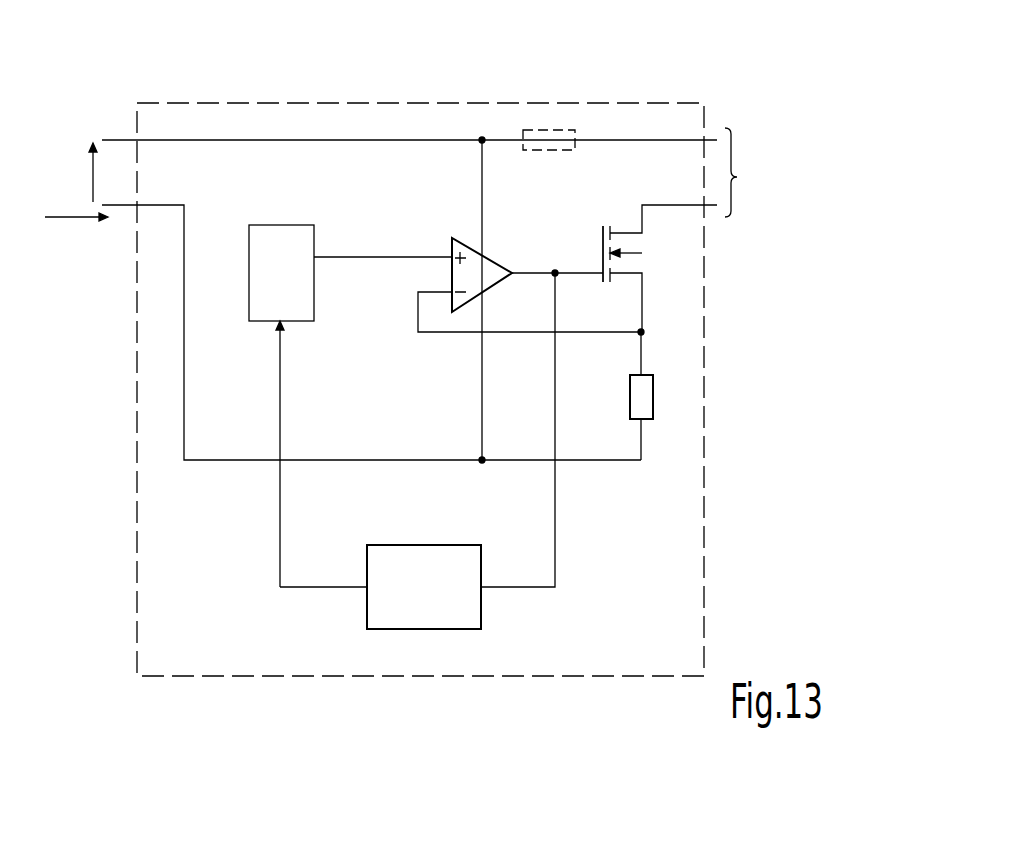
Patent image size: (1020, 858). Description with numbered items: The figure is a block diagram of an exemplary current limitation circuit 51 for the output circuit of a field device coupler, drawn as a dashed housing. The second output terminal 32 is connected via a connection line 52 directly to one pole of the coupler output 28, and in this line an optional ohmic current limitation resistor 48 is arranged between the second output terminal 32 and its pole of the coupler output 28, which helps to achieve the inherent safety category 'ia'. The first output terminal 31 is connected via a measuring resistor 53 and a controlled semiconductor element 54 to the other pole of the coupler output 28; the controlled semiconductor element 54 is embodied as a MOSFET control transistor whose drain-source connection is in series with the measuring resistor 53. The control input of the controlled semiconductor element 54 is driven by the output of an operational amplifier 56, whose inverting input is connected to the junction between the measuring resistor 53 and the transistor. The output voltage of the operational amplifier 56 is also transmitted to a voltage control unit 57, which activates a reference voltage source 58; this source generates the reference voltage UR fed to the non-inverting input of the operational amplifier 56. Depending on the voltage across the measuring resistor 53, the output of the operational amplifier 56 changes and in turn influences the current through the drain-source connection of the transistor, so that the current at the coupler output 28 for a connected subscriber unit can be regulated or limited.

The coupler output 28 is at (749, 172).
The first output terminal 31 is at (137, 205).
The second output terminal 32 is at (137, 140).
The current limitation resistor 48 is at (550, 130).
The current limitation circuit 51 is at (420, 100).
The connection line 52 is at (343, 143).
The measuring resistor 53 is at (653, 392).
The controlled semiconductor element 54 is at (590, 238).
The operational amplifier 56 is at (497, 258).
The voltage control unit 57 is at (415, 557).
The reference voltage source 58 is at (278, 232).